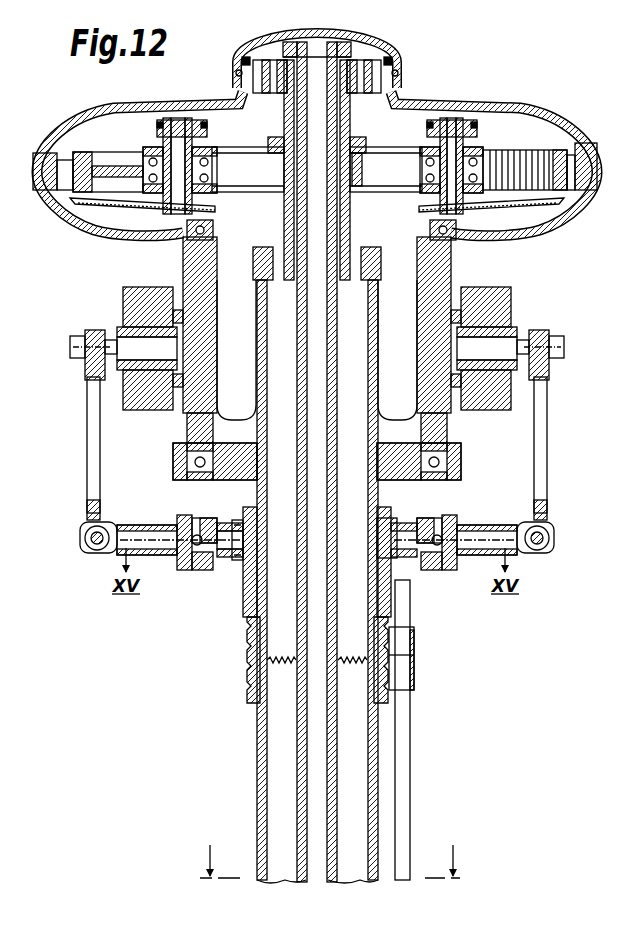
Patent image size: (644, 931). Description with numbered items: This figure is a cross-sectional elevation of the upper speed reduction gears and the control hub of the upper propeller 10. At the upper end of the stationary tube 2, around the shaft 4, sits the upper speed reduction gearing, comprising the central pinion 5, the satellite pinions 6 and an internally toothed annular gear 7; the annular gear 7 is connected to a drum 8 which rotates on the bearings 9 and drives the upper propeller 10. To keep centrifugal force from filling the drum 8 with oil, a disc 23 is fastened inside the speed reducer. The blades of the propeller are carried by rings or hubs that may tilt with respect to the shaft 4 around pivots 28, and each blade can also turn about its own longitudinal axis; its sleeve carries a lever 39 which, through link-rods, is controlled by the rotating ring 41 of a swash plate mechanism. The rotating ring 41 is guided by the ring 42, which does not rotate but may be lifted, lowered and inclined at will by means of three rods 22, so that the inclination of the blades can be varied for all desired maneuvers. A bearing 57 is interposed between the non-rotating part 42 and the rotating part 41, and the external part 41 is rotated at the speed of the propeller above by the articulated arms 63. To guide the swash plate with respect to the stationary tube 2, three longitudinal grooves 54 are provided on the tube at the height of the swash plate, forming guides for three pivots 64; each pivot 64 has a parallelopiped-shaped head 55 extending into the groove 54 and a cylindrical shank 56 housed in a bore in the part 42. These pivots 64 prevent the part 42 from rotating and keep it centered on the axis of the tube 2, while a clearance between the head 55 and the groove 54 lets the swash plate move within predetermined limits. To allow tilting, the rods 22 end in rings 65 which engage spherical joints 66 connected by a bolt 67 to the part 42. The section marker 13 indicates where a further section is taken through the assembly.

The tube 2 is at (368, 338).
The shaft 4 is at (338, 596).
The central pinion 5 is at (350, 169).
The satellite pinions 6 is at (119, 168).
The internally toothed annular gear 7 is at (548, 160).
The drum 8 is at (84, 220).
The bearings 9 is at (192, 232).
The upper propeller 10 is at (452, 98).
The section line 13 is at (333, 861).
The rods 22 is at (410, 738).
The disc 23 is at (538, 208).
The pivots 28 is at (496, 342).
The levers 39 is at (108, 328).
The rotating ring 41 is at (176, 526).
The guide ring 42 is at (212, 520).
The longitudinal grooves 54 is at (250, 605).
The head 55 is at (243, 560).
The cylindrical shank 56 is at (228, 558).
The bearing 57 is at (186, 520).
The articulated arms 63 is at (86, 435).
The pivots 64 is at (200, 568).
The rings 65 is at (420, 520).
The spherical joints 66 is at (403, 522).
The bolt 67 is at (446, 520).